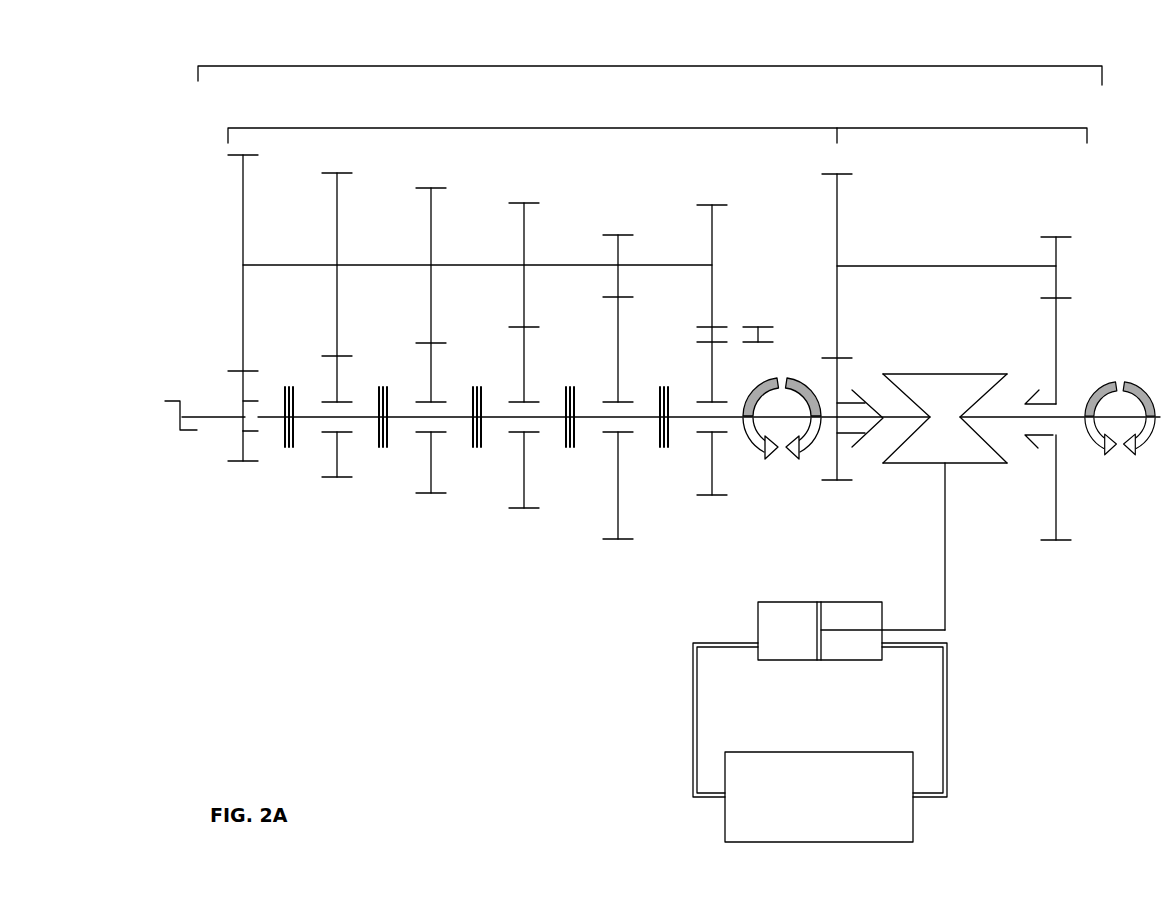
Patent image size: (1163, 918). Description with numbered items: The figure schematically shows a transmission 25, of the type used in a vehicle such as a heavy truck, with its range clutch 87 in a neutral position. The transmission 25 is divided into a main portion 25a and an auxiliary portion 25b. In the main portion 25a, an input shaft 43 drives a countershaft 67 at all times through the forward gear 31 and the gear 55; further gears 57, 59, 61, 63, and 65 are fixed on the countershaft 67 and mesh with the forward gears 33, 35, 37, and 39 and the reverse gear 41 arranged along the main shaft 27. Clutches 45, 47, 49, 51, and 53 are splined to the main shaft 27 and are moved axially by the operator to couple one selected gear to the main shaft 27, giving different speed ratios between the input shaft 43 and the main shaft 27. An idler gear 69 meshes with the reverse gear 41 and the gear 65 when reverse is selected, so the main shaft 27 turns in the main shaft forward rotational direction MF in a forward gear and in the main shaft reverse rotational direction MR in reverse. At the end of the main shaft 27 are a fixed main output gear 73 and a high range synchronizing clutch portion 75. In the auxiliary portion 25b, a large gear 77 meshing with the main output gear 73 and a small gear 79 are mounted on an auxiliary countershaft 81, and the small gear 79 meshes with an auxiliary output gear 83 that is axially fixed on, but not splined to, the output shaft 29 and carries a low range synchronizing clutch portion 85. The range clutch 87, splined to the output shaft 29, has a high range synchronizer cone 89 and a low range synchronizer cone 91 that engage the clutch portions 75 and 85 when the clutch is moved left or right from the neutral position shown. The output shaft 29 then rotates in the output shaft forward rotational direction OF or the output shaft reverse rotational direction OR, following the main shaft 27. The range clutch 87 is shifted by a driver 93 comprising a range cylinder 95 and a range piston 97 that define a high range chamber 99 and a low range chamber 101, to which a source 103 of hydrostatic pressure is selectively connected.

The transmission 25 is at (650, 66).
The main portion 25a is at (493, 128).
The auxiliary portion 25b is at (947, 128).
The main shaft 27 is at (728, 417).
The output shaft 29 is at (1070, 422).
The forward gear 31 is at (243, 461).
The forward gear 33 is at (337, 477).
The forward gear 35 is at (431, 493).
The forward gear 37 is at (524, 508).
The forward gear 39 is at (618, 539).
The reverse gear 41 is at (712, 495).
The input shaft 43 is at (196, 414).
The clutch 45 is at (289, 447).
The clutch 47 is at (383, 447).
The clutch 49 is at (477, 447).
The clutch 51 is at (570, 447).
The clutch 53 is at (664, 447).
The countershaft gear 55 is at (243, 238).
The countershaft gear 57 is at (337, 235).
The countershaft gear 59 is at (431, 238).
The countershaft gear 61 is at (524, 252).
The countershaft gear 63 is at (618, 235).
The countershaft gear 65 is at (712, 220).
The countershaft 67 is at (297, 266).
The idler gear 69 is at (758, 335).
The main output gear 73 is at (833, 481).
The high range synchronizing clutch portion 75 is at (866, 433).
The large gear 77 is at (837, 221).
The small gear 79 is at (1062, 238).
The auxiliary countershaft 81 is at (920, 266).
The auxiliary output gear 83 is at (1056, 345).
The low range synchronizing clutch portion 85 is at (1038, 448).
The range clutch 87 is at (931, 365).
The high range synchronizer cone 89 is at (893, 389).
The low range synchronizer cone 91 is at (1005, 389).
The driver 93 is at (808, 670).
The range cylinder 95 is at (773, 602).
The range piston 97 is at (818, 612).
The high range chamber 99 is at (868, 612).
The low range chamber 101 is at (773, 574).
The source of hydrostatic pressure 103 is at (913, 827).
The main shaft forward rotational direction MF is at (765, 444).
The main shaft reverse rotational direction MR is at (803, 432).
The output shaft reverse rotational direction OR is at (1148, 390).
The output shaft forward rotational direction OF is at (1110, 445).